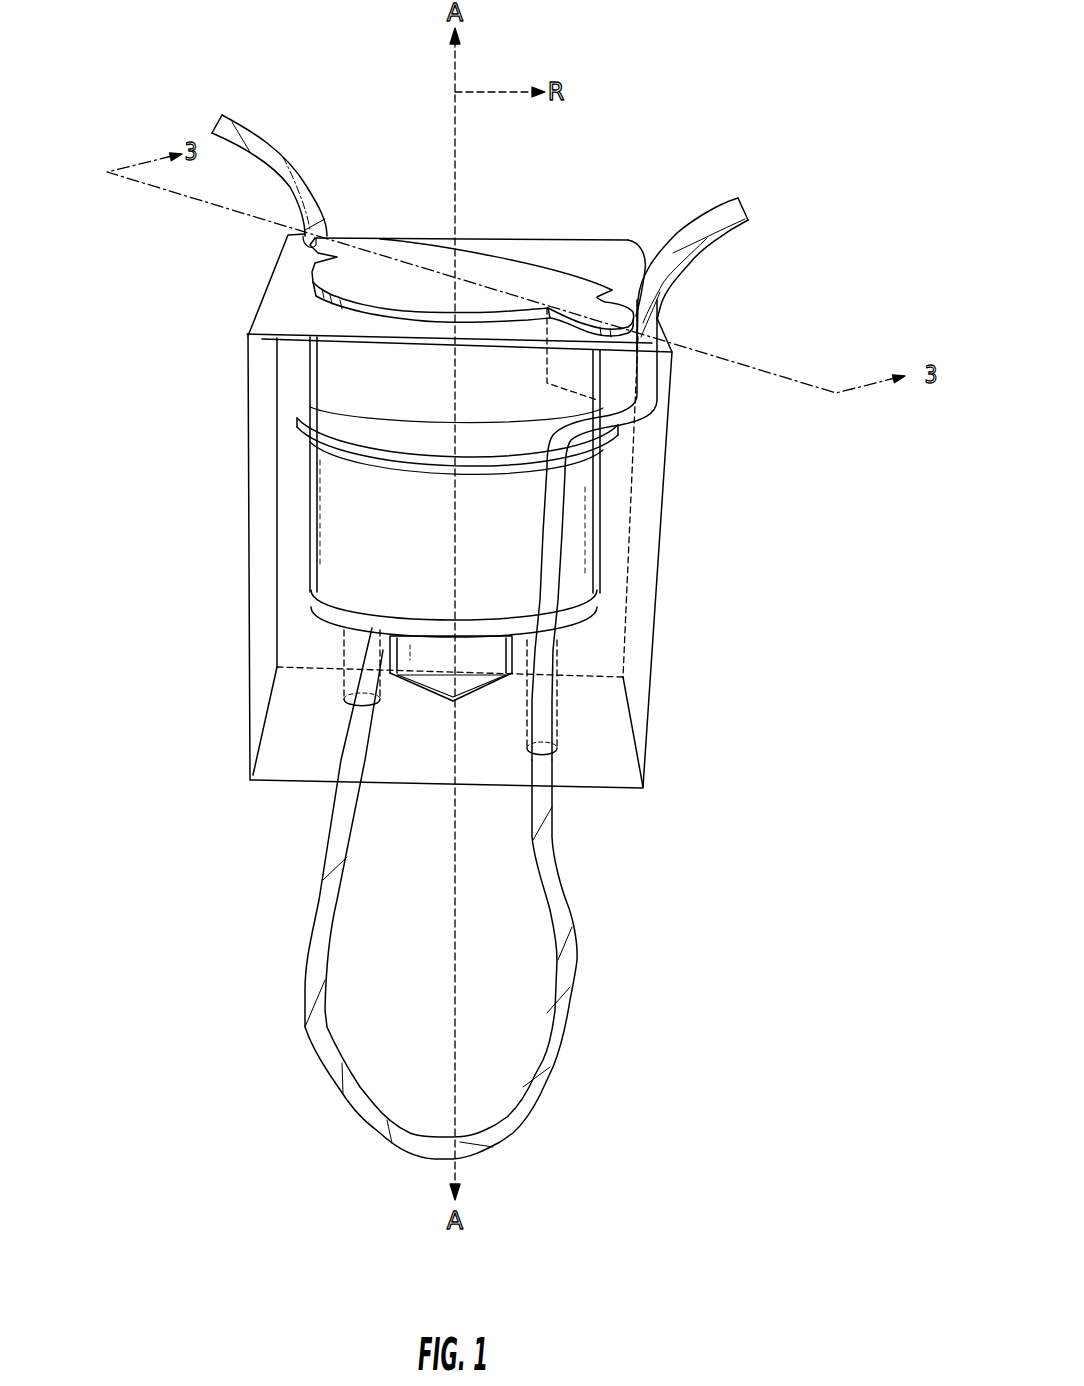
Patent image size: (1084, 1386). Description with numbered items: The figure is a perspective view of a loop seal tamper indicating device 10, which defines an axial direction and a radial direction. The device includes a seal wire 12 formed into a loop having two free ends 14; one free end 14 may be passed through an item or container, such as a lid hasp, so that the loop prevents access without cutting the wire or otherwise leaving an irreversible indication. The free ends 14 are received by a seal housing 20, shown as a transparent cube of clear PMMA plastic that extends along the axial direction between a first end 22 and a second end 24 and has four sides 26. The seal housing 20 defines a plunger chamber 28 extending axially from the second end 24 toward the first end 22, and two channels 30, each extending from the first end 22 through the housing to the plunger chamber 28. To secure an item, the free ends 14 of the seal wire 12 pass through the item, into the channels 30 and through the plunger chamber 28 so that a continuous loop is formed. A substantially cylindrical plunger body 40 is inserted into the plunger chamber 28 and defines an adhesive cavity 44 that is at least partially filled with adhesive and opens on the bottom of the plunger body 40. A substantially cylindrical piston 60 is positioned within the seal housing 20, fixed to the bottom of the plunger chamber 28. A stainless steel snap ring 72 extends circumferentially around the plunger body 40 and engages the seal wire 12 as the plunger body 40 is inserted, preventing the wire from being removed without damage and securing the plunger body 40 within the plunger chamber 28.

The loop seal tamper indicating device 10 is at (808, 122).
The seal wire 12 is at (576, 928).
The free ends 14 is at (231, 125).
The seal housing 20 is at (617, 607).
The first end 22 is at (286, 780).
The second end 24 is at (613, 253).
The sides 26 is at (252, 510).
The plunger chamber 28 is at (610, 537).
The channels 30 is at (566, 693).
The plunger body 40 is at (340, 282).
The adhesive cavity 44 is at (384, 502).
The piston 60 is at (436, 655).
The snap ring 72 is at (600, 440).